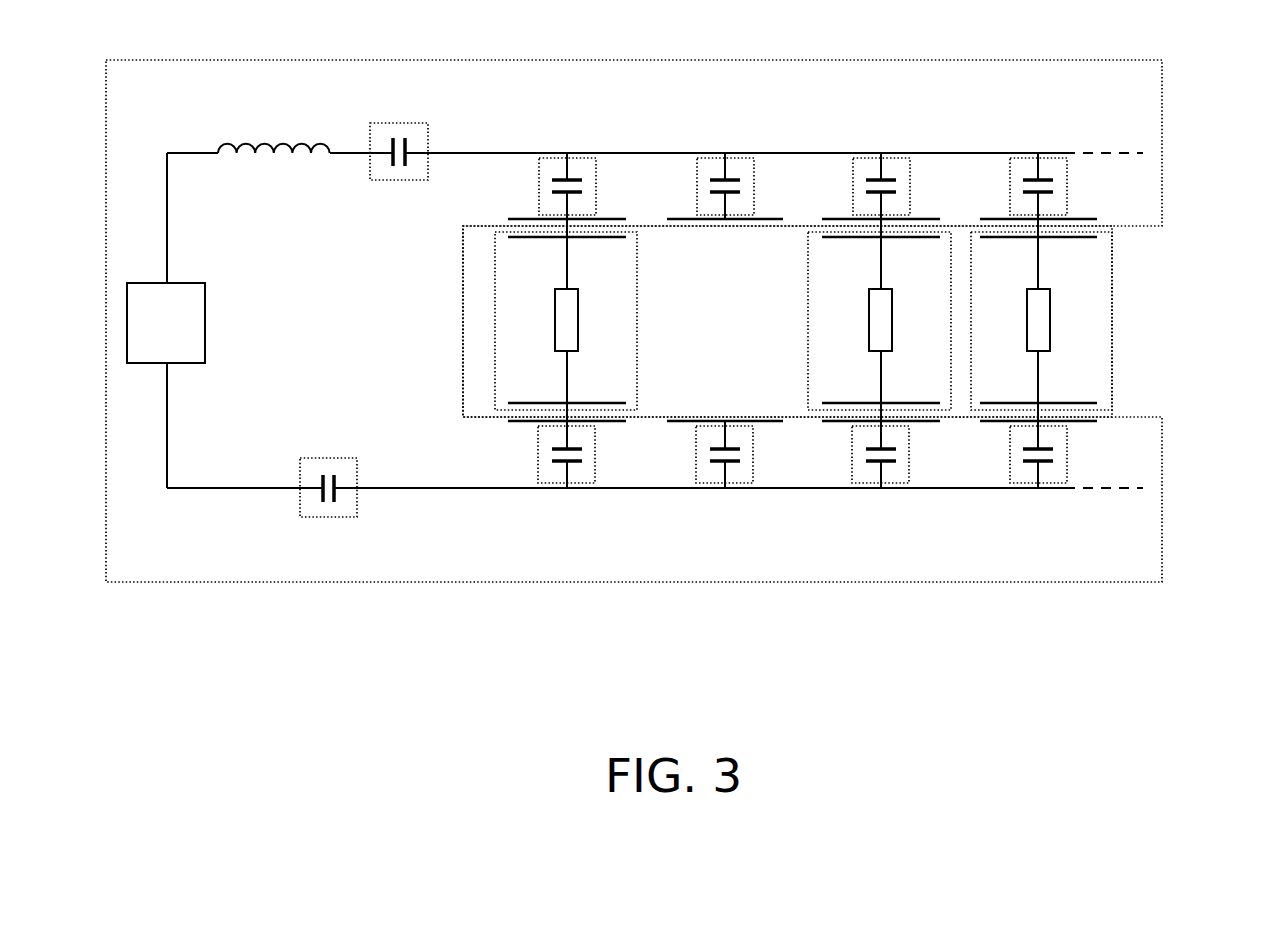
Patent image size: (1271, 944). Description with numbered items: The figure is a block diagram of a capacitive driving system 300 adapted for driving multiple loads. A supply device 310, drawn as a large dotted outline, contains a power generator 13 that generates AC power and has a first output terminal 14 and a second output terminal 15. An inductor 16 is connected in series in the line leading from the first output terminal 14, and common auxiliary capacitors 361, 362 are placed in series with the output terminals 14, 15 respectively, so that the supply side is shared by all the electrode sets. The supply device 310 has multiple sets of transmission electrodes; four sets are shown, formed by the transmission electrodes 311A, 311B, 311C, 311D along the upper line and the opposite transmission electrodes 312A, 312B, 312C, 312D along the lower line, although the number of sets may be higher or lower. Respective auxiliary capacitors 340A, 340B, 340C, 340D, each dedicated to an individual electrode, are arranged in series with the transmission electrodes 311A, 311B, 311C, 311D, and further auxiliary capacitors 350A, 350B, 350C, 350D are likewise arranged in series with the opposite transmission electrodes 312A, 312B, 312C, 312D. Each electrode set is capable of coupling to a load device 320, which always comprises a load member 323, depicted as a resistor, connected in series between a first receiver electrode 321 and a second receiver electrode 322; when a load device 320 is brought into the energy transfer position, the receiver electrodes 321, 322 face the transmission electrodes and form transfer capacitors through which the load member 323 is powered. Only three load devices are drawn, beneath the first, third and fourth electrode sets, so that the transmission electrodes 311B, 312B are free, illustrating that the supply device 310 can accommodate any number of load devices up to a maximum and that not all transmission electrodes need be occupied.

The capacitive driving system 300 is at (226, 38).
The supply device 310 is at (1162, 128).
The power generator 13 is at (166, 323).
The first output terminal 14 is at (167, 192).
The second output terminal 15 is at (167, 453).
The inductor 16 is at (292, 145).
The common auxiliary capacitor 361 is at (378, 178).
The common auxiliary capacitor 362 is at (350, 460).
The auxiliary capacitor 340A is at (539, 170).
The auxiliary capacitor 340B is at (697, 170).
The auxiliary capacitor 340C is at (853, 170).
The auxiliary capacitor 340D is at (1010, 170).
The transmission electrode 311A is at (520, 219).
The transmission electrode 311B is at (692, 219).
The transmission electrode 311C is at (852, 219).
The transmission electrode 311D is at (1008, 219).
The opposite transmission electrode 312A is at (527, 421).
The opposite transmission electrode 312B is at (690, 421).
The opposite transmission electrode 312C is at (847, 421).
The opposite transmission electrode 312D is at (1000, 421).
The auxiliary capacitor 350A is at (547, 482).
The auxiliary capacitor 350B is at (713, 482).
The auxiliary capacitor 350C is at (872, 482).
The auxiliary capacitor 350D is at (1028, 482).
The load device 320 is at (835, 320).
The receiver electrode 321 is at (1067, 240).
The receiver electrode 322 is at (1064, 403).
The load member 323 is at (1050, 327).